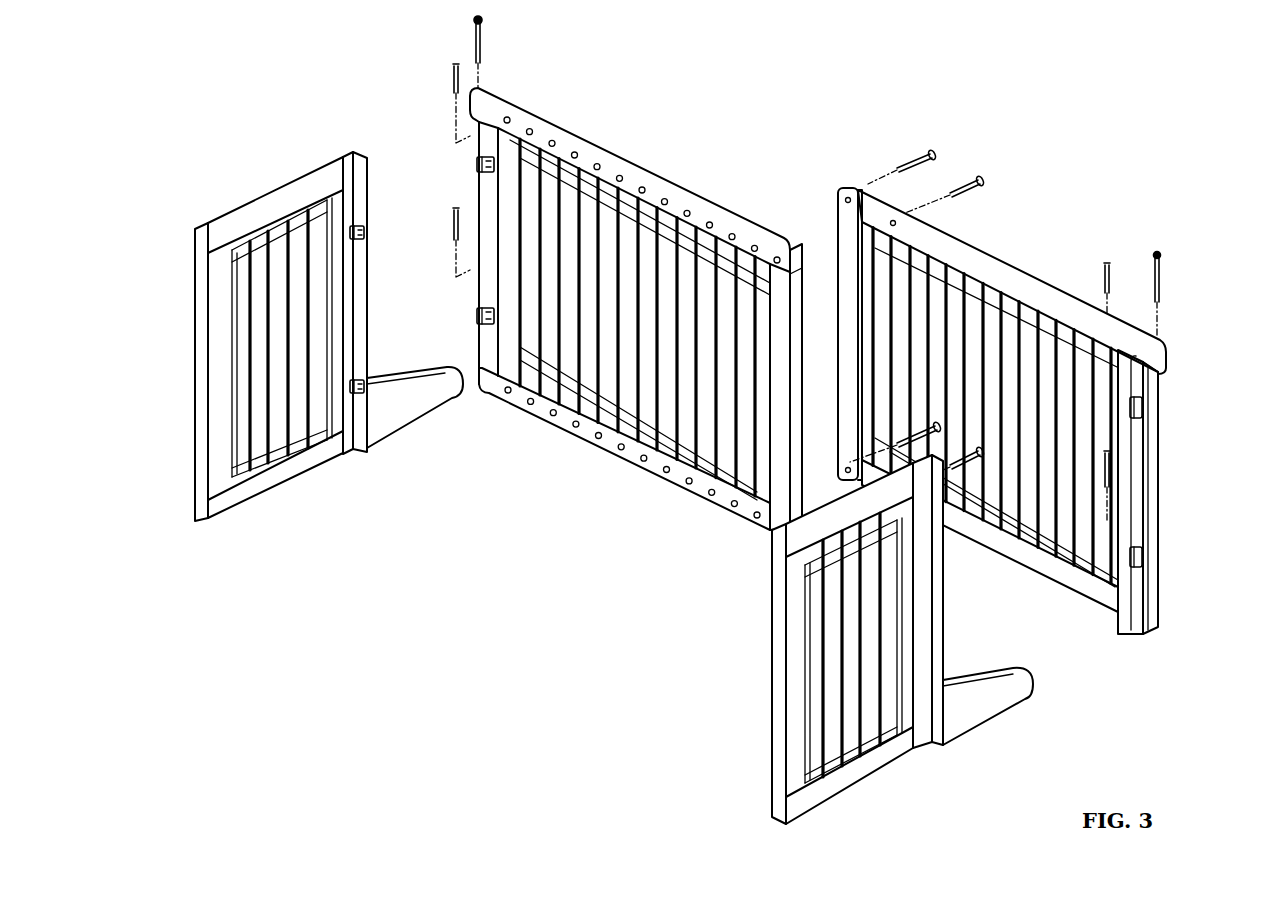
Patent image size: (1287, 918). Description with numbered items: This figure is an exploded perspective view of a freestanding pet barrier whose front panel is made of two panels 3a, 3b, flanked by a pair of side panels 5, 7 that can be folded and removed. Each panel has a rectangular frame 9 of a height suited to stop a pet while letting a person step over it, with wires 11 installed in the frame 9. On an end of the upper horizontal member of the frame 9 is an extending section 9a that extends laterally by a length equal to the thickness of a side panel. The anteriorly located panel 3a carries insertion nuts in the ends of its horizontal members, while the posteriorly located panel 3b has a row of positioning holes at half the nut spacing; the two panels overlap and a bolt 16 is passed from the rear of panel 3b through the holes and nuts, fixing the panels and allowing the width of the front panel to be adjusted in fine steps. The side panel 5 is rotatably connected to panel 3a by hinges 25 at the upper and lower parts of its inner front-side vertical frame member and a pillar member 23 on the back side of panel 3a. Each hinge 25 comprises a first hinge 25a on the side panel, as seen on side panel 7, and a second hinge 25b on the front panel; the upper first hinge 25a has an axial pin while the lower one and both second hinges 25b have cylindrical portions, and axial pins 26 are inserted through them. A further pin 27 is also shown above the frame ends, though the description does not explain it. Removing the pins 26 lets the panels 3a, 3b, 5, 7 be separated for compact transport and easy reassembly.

The panel 3a is at (1056, 411).
The panel 3b is at (604, 152).
The side panel 5 is at (750, 707).
The side panel 7 is at (186, 342).
The rectangular frame 9 is at (727, 210).
The extending section 9a is at (1158, 368).
The wires 11 is at (588, 375).
The bolt 16 is at (909, 162).
The pillar member 23 is at (1143, 383).
The hinges 25 is at (1136, 402).
The first hinge 25a is at (366, 233).
The second hinge 25b is at (476, 164).
The axial pin 26 is at (453, 80).
The hinge pin 27 is at (481, 37).